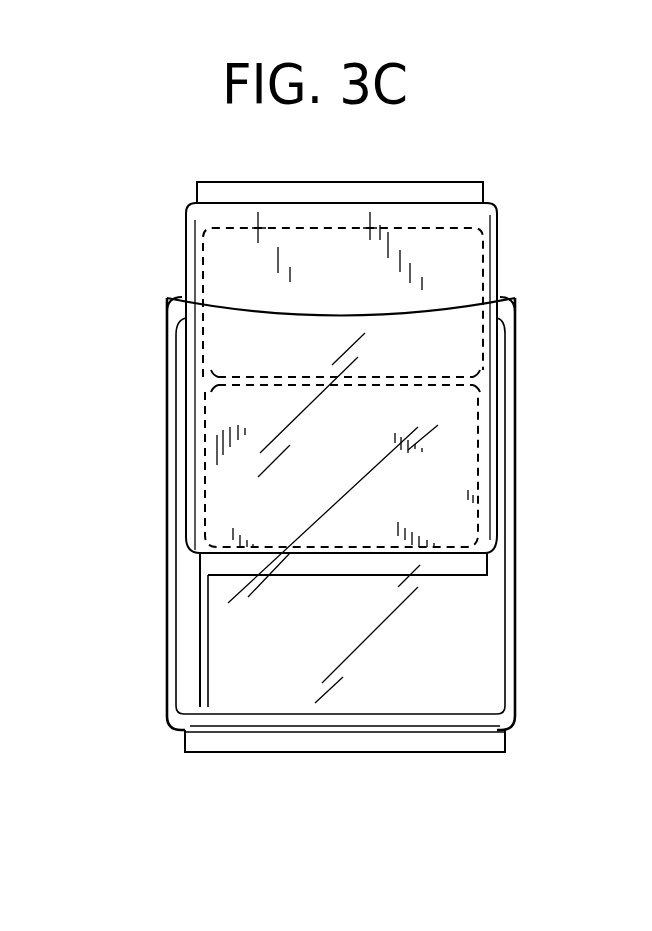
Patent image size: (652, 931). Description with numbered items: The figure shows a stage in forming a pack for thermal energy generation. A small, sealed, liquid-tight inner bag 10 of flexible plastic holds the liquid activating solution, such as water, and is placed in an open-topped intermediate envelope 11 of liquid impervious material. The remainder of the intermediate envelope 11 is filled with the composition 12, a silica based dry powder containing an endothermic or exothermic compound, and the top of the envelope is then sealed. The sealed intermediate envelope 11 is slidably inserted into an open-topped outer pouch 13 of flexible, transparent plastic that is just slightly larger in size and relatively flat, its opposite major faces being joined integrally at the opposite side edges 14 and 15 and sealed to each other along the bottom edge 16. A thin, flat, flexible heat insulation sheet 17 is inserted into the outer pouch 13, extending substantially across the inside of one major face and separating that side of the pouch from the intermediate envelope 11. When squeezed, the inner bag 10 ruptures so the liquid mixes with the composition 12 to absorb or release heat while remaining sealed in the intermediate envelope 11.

The inner bag 10 is at (455, 458).
The intermediate envelope 11 is at (485, 205).
The composition 12 is at (460, 250).
The outer pouch 13 is at (517, 335).
The side edge 14 is at (170, 440).
The side edge 15 is at (517, 557).
The bottom edge 16 is at (345, 748).
The heat insulation sheet 17 is at (185, 600).